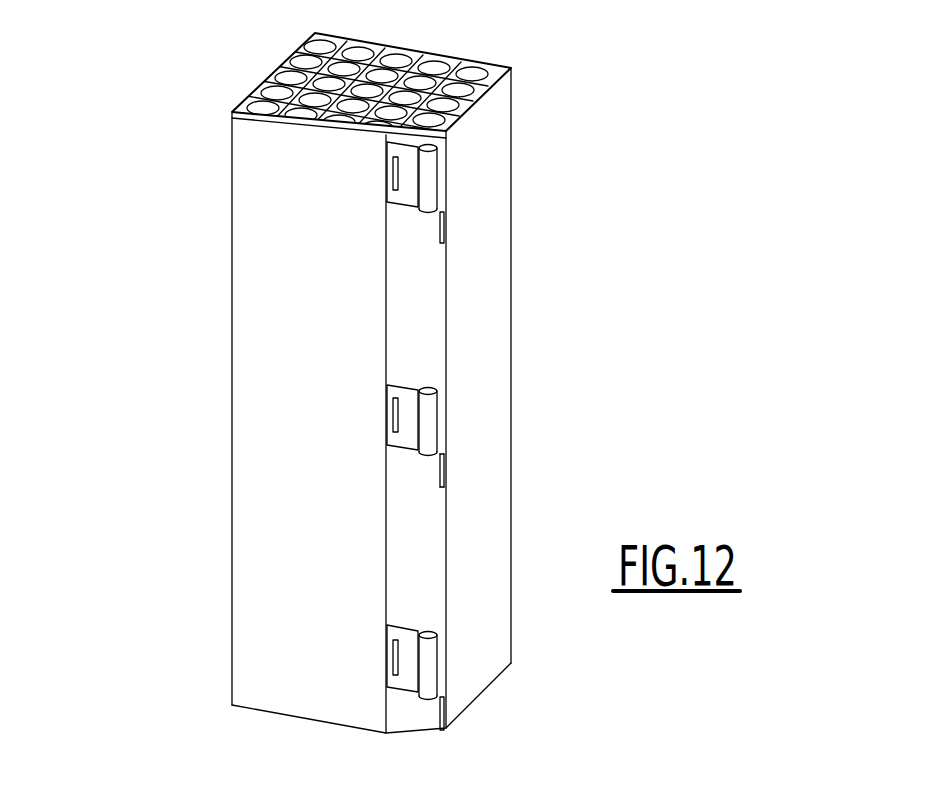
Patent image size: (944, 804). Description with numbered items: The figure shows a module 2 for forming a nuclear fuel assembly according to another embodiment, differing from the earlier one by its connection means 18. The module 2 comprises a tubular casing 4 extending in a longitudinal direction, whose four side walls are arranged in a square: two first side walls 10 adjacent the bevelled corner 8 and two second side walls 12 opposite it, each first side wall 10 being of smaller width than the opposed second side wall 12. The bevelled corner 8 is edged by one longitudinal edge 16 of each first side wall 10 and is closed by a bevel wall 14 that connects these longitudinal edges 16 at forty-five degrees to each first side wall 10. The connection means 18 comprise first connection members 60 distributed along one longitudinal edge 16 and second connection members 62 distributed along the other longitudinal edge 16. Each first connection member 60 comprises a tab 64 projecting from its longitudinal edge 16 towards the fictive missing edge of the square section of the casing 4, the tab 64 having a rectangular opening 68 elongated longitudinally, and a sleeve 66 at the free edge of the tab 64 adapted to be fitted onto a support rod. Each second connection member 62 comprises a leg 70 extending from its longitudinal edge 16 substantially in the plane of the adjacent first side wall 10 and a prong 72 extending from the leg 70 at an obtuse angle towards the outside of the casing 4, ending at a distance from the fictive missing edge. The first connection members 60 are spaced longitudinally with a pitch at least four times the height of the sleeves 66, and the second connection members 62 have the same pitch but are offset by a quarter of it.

The module 2 is at (138, 97).
The tubular casing 4 is at (222, 137).
The bevelled corner 8 is at (427, 280).
The first side wall 10 is at (247, 202).
The second side wall 12 is at (270, 80).
The bevel wall 14 is at (402, 295).
The longitudinal edge 16 is at (386, 568).
The connection means 18 is at (455, 395).
The first connection member 60 is at (377, 190).
The second connection member 62 is at (455, 223).
The tab 64 is at (393, 388).
The sleeve 66 is at (422, 452).
The opening 68 is at (393, 423).
The leg 70 is at (445, 440).
The prong 72 is at (441, 479).